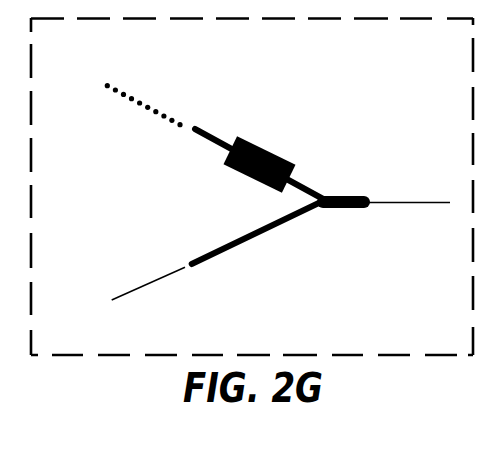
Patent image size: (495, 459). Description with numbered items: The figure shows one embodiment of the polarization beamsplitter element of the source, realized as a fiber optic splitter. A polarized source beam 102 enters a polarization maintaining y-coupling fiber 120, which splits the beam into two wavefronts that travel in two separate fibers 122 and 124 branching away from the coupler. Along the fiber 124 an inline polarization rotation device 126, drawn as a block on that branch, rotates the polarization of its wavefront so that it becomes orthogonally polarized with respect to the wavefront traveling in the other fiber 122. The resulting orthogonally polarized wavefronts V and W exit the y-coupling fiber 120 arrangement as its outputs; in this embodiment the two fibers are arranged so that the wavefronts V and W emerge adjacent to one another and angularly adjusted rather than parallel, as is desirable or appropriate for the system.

The polarized source beam 102 is at (403, 219).
The polarization maintaining y-coupling fiber 120 is at (367, 185).
The fiber 122 is at (214, 271).
The fiber 124 is at (222, 120).
The inline polarization rotation device 126 is at (287, 144).
The orthogonally polarized wavefront V is at (105, 99).
The orthogonally polarized wavefront W is at (125, 282).